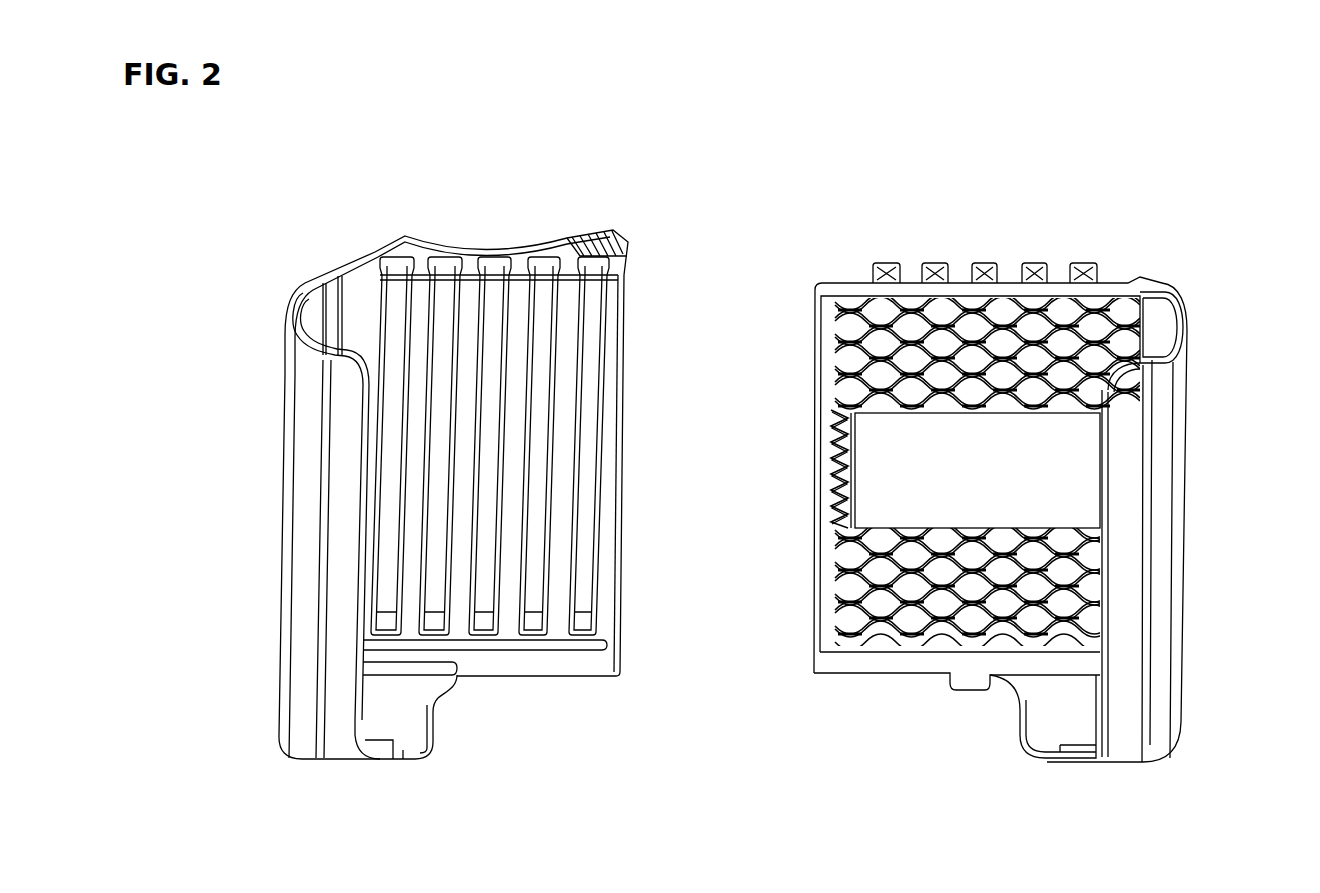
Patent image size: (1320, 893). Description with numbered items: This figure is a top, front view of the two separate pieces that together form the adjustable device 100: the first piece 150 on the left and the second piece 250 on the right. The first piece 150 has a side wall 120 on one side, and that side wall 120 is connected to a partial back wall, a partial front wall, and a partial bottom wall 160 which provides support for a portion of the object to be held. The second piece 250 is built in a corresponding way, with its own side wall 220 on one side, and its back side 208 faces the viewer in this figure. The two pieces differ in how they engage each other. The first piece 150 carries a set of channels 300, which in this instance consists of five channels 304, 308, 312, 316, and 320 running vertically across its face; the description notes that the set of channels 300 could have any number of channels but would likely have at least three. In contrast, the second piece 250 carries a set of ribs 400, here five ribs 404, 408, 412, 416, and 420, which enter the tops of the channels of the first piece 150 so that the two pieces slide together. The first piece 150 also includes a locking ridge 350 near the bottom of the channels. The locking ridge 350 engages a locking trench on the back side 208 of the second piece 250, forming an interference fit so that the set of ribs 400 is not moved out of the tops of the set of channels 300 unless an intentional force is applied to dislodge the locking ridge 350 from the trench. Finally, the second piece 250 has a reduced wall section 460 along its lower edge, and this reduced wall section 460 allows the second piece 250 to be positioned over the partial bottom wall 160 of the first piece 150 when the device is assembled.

The adjustable device 100 is at (168, 124).
The side wall 120 is at (310, 372).
The first piece 150 is at (306, 448).
The partial bottom wall 160 is at (392, 705).
The back side 208 is at (818, 527).
The side wall 220 is at (1187, 325).
The second piece 250 is at (1185, 448).
The set of channels 300 is at (257, 135).
The channel 304 is at (392, 262).
The channel 308 is at (448, 262).
The channel 312 is at (492, 262).
The channel 316 is at (547, 263).
The channel 320 is at (593, 258).
The locking ridge 350 is at (505, 645).
The set of ribs 400 is at (772, 184).
The rib 404 is at (887, 263).
The rib 408 is at (938, 264).
The rib 412 is at (982, 263).
The rib 416 is at (1035, 263).
The rib 420 is at (1082, 263).
The reduced wall section 460 is at (950, 677).